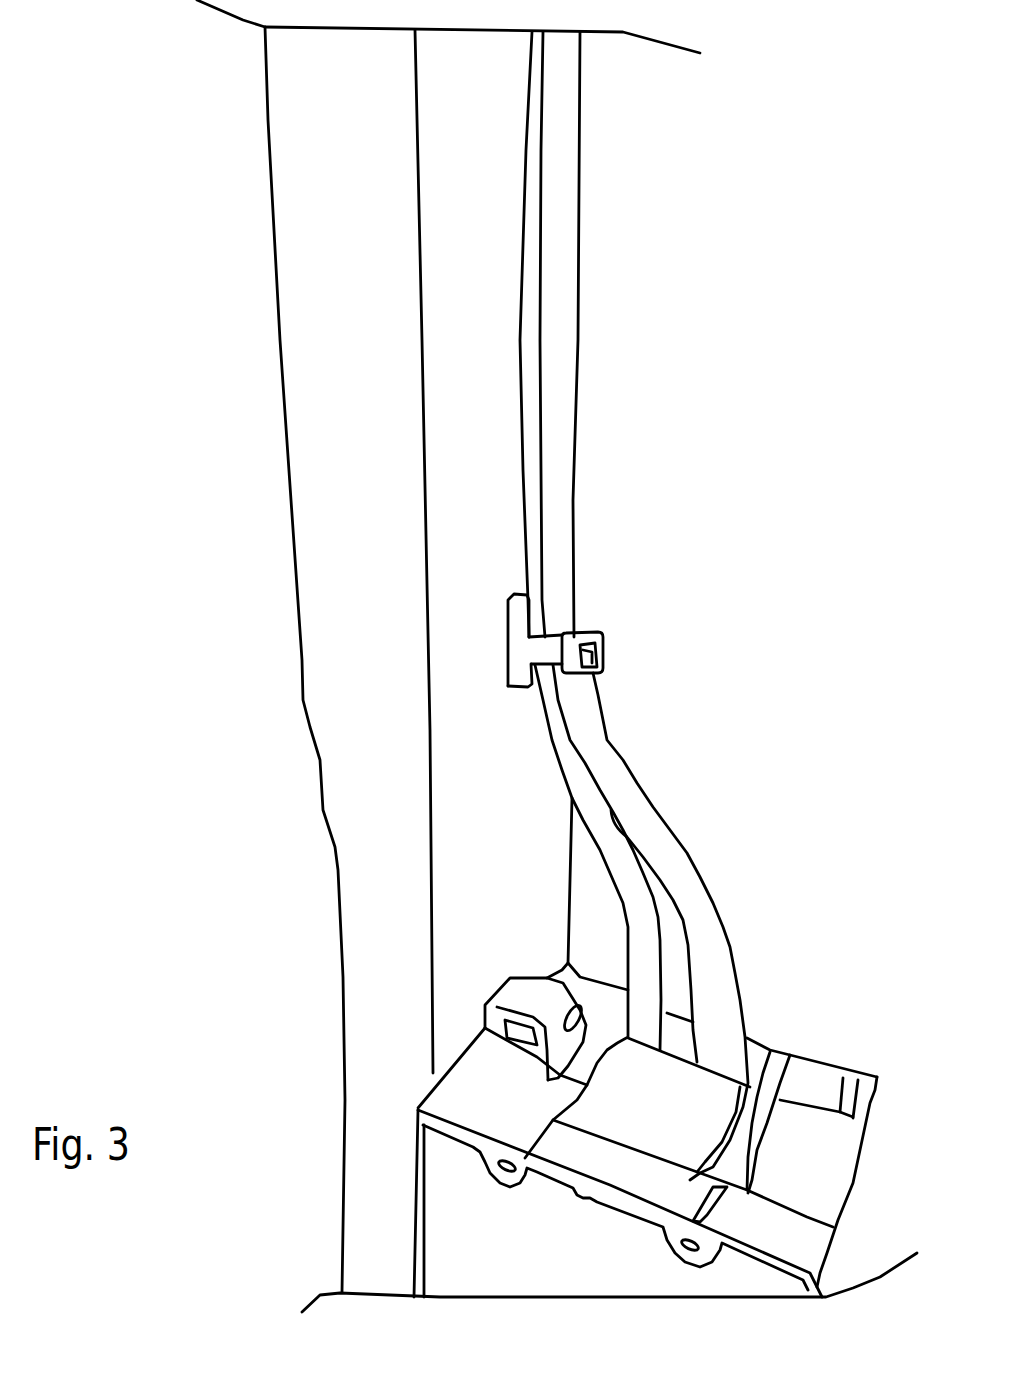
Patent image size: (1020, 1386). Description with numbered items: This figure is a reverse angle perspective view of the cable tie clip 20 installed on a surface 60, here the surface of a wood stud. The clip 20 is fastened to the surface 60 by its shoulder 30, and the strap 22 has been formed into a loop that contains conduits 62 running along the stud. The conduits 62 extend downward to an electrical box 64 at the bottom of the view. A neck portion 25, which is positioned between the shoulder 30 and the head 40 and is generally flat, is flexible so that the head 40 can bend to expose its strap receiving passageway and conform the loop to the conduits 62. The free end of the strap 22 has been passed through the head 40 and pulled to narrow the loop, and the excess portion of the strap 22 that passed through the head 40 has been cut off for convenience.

The surface 60 is at (447, 310).
The conduit 62 is at (533, 267).
The cable tie clip 20 is at (571, 620).
The shoulder 30 is at (517, 641).
The neck portion 25 is at (553, 648).
The head 40 is at (626, 656).
The strap 22 is at (607, 655).
The electrical box 64 is at (817, 1080).